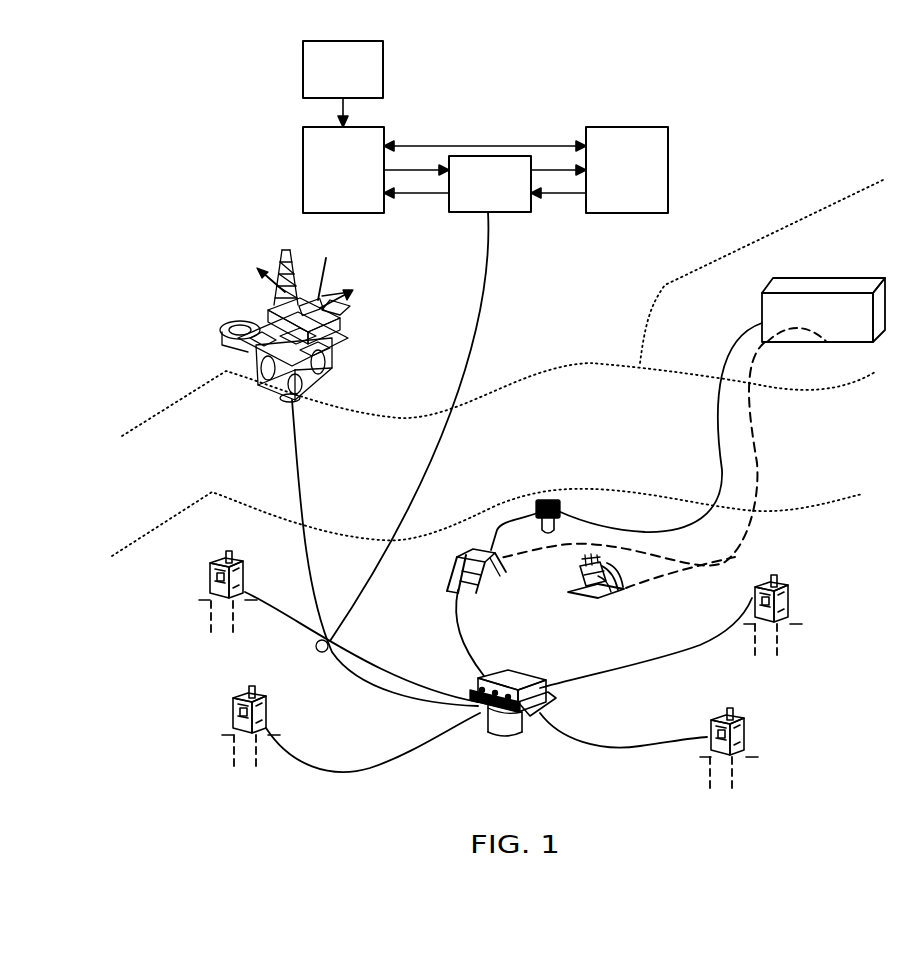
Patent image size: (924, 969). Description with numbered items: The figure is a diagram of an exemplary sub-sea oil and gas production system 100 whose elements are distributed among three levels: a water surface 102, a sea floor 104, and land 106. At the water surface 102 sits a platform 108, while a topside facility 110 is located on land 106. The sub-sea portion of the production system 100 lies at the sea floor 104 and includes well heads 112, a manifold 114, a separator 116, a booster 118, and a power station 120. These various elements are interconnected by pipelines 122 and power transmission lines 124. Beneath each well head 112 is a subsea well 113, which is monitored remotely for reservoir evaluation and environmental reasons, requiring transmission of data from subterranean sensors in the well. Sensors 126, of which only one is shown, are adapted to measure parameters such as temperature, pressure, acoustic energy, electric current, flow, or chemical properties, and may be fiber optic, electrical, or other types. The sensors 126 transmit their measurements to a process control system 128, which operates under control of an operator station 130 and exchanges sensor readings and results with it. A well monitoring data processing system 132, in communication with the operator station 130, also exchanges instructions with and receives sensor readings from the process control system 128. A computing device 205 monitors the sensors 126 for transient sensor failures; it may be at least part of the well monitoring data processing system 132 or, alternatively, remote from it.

The sub-sea oil and gas production system 100 is at (145, 186).
The water surface 102 is at (148, 428).
The sea floor 104 is at (150, 546).
The land 106 is at (658, 292).
The platform 108 is at (340, 328).
The topside facility 110 is at (843, 290).
The well heads 112 is at (210, 578).
The subsea well 113 is at (211, 618).
The manifold 114 is at (518, 730).
The separator 116 is at (446, 582).
The booster 118 is at (549, 500).
The power station 120 is at (603, 598).
The pipelines 122 is at (350, 677).
The power transmission lines 124 is at (758, 450).
The sensors 126 is at (302, 654).
The process control system 128 is at (509, 195).
The operator station 130 is at (646, 183).
The well monitoring data processing system 132 is at (362, 183).
The computing device 205 is at (362, 83).